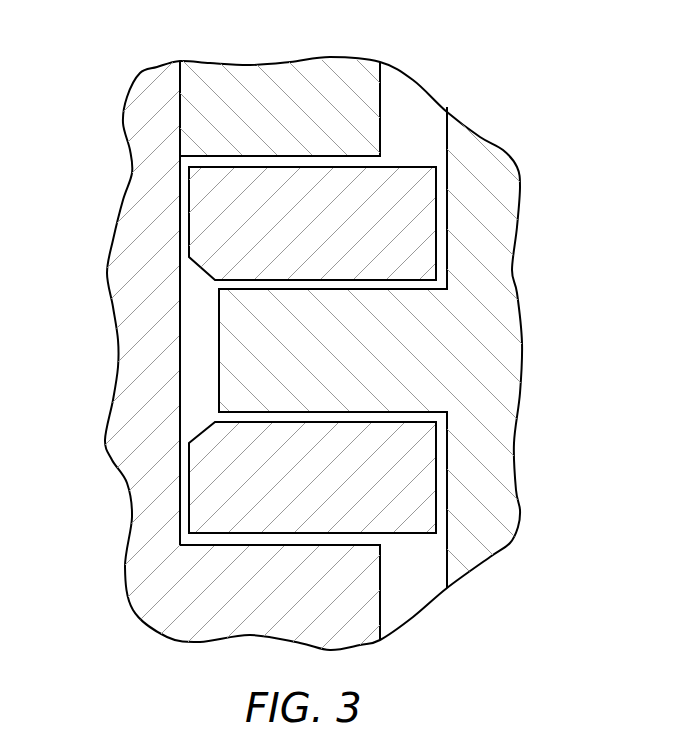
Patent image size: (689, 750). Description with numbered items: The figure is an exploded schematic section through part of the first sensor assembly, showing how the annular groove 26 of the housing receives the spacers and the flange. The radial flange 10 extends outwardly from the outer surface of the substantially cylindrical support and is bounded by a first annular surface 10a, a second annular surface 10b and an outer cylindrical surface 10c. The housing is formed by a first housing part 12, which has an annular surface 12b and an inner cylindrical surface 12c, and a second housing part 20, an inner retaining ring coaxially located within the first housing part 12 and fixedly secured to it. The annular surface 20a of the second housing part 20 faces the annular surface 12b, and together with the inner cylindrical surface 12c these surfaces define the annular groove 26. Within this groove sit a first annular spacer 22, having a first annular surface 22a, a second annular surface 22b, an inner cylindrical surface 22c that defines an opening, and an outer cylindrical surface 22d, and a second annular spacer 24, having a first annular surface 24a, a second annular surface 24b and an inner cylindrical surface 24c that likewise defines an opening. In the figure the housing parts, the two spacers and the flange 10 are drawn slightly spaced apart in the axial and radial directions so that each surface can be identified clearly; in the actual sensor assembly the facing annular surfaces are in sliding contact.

The radial flange 10 is at (237, 393).
The first annular surface 10a is at (315, 412).
The second annular surface 10b is at (315, 289).
The outer cylindrical surface 10c is at (218, 340).
The first housing part 12 is at (122, 265).
The annular surface 12b is at (318, 545).
The inner cylindrical surface 12c is at (180, 310).
The second housing part 20 is at (283, 78).
The annular surface 20a is at (336, 161).
The first annular spacer 22 is at (417, 498).
The first annular surface 22a is at (413, 533).
The second annular surface 22b is at (393, 422).
The inner cylindrical surface 22c is at (436, 450).
The outer cylindrical surface 22d is at (190, 508).
The second annular spacer 24 is at (417, 240).
The first annular surface 24a is at (393, 280).
The second annular surface 24b is at (410, 167).
The inner cylindrical surface 24c is at (436, 193).
The annular groove 26 is at (192, 367).